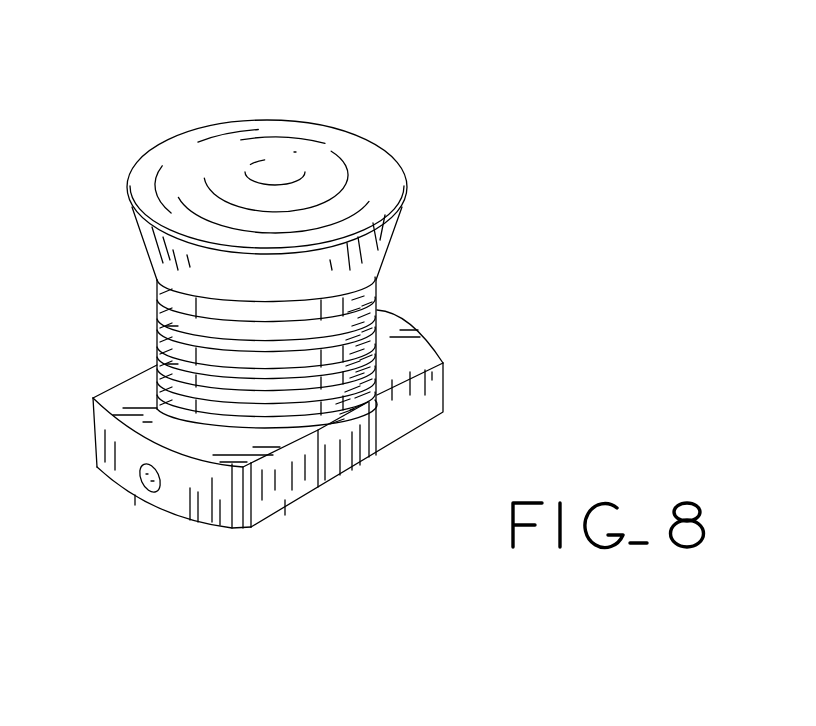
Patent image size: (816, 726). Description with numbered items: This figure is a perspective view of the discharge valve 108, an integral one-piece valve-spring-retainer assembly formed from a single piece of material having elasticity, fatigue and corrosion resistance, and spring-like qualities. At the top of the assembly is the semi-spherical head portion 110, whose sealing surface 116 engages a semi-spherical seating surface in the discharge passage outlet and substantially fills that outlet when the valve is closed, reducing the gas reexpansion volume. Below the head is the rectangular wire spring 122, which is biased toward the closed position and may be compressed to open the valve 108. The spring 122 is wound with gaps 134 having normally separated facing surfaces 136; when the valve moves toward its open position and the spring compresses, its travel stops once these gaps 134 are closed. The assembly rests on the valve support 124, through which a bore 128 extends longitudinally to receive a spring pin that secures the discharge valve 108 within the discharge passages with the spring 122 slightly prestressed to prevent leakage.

The discharge valve 108 is at (475, 188).
The semi-spherical head portion 110 is at (336, 122).
The sealing surface 116 is at (248, 125).
The rectangular wire spring 122 is at (383, 282).
The valve support 124 is at (233, 535).
The bore 128 is at (145, 482).
The gaps 134 is at (157, 318).
The facing surfaces 136 is at (178, 357).